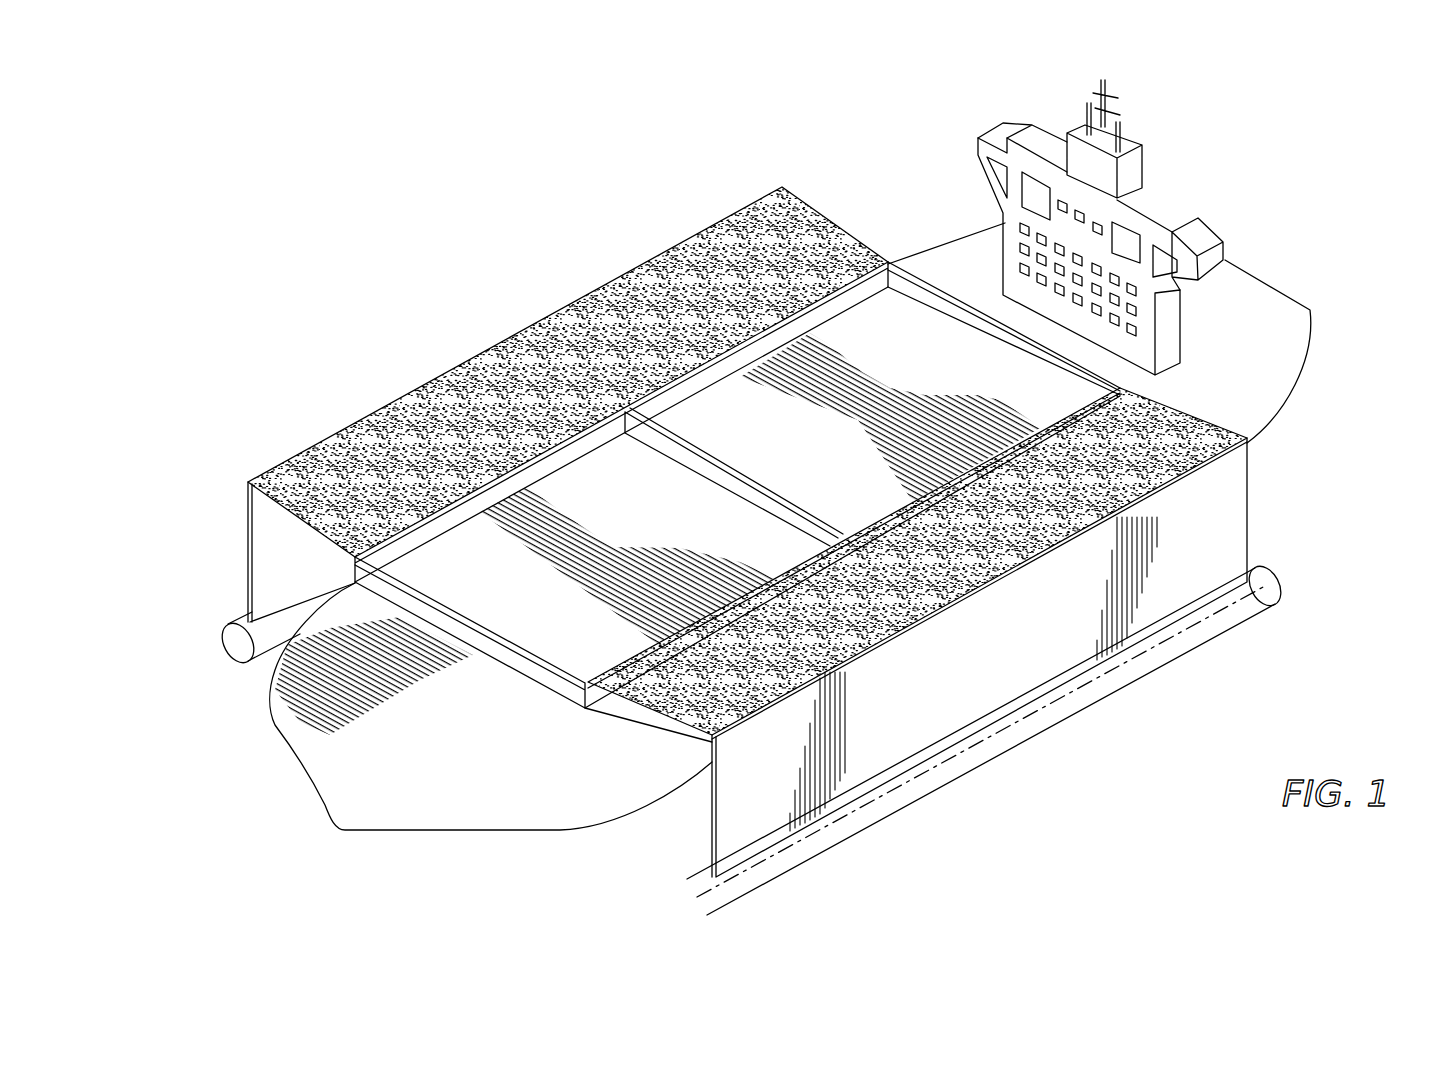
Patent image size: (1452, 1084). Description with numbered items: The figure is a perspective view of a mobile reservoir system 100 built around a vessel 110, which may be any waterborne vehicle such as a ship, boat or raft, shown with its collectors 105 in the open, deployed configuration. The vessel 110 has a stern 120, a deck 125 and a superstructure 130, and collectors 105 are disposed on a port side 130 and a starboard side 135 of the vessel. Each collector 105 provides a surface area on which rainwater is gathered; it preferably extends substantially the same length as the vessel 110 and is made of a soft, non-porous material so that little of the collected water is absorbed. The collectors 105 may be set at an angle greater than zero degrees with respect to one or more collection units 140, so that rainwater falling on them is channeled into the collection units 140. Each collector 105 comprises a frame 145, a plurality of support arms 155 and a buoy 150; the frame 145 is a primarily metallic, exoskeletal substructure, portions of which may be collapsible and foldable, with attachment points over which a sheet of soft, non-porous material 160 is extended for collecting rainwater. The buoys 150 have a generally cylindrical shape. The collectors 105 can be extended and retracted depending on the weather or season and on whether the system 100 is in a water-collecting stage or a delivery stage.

The mobile reservoir system 100 is at (743, 513).
The collector 105 is at (650, 255).
The vessel 110 is at (434, 775).
The stern 120 is at (1300, 216).
The deck 125 is at (308, 707).
The superstructure 130 is at (798, 493).
The starboard side 135 is at (219, 499).
The collection unit 140 is at (860, 327).
The frame 145 is at (286, 532).
The buoy 150 is at (1195, 644).
The support arm 155 is at (890, 262).
The soft, non-porous material 160 is at (1157, 428).